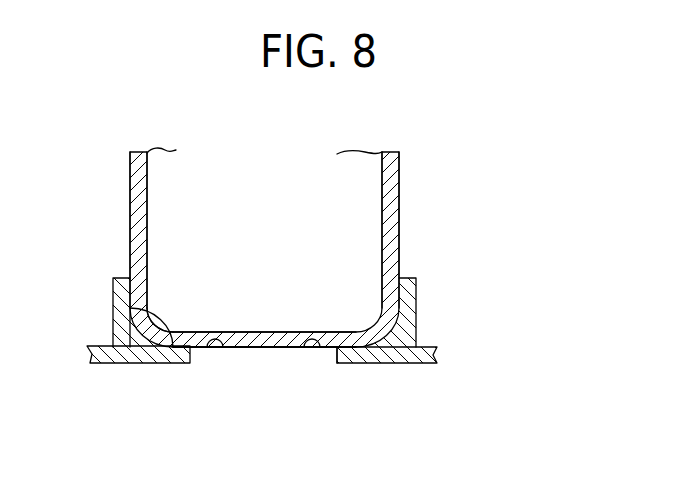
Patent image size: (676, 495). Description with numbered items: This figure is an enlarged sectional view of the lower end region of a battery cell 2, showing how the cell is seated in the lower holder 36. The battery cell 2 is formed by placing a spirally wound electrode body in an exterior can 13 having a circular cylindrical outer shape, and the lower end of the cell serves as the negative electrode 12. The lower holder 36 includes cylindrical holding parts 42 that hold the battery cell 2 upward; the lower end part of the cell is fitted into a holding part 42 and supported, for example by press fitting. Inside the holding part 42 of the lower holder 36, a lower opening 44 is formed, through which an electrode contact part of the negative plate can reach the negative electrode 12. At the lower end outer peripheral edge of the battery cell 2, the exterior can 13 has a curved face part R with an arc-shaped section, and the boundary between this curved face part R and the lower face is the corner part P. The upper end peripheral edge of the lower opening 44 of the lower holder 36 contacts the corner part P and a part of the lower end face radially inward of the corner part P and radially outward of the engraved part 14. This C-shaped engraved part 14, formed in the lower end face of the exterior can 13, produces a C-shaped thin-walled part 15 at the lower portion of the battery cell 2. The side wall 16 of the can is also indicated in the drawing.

The battery cell 2 is at (399, 196).
The negative electrode 12 is at (255, 348).
The exterior can 13 is at (399, 236).
The C-shaped engraved part 14 is at (217, 350).
The C-shaped thin-walled part 15 is at (217, 337).
The side wall portion 16 is at (130, 215).
The lower holder 36 is at (395, 363).
The holding part 42 is at (415, 310).
The lower opening 44 is at (330, 347).
The corner part P is at (170, 330).
The curved face part R is at (132, 345).